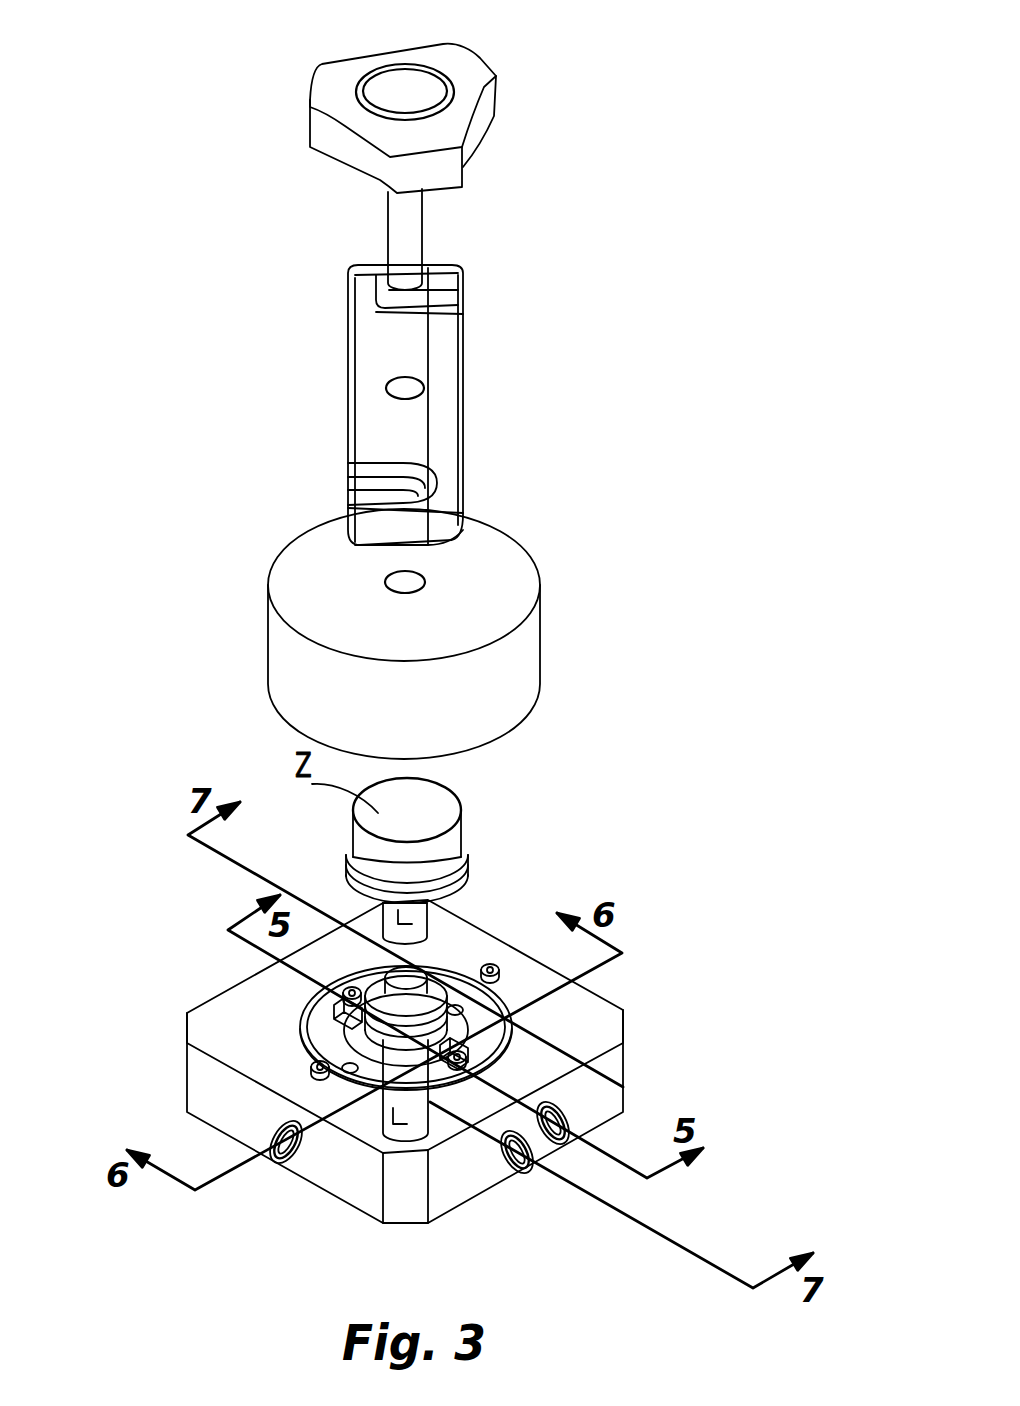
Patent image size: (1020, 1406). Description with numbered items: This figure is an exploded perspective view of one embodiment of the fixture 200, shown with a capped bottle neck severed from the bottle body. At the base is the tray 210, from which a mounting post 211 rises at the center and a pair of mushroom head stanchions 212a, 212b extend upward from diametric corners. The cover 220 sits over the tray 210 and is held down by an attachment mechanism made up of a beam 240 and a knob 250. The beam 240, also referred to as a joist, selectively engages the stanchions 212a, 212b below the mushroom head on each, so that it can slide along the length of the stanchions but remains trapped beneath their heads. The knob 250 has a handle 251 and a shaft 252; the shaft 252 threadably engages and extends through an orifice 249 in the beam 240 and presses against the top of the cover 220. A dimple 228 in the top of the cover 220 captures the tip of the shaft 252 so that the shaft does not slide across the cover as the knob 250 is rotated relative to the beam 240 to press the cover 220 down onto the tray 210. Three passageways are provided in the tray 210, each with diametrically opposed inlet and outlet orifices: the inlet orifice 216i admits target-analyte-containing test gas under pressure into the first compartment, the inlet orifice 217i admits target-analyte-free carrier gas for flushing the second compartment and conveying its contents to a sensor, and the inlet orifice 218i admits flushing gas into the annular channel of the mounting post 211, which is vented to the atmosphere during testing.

The pressure regulator assembly 200 is at (236, 60).
The knob 250 is at (480, 110).
The handle 251 is at (458, 70).
The shaft 252 is at (395, 219).
The beam 240 is at (357, 346).
The orifice 249 is at (404, 387).
The cover 220 is at (287, 661).
The dimple 228 is at (405, 583).
The mushroom head stanchion 212a is at (420, 924).
The tray 210 is at (227, 1013).
The mounting post 211 is at (375, 1050).
The mushroom head stanchion 212b is at (425, 1100).
The inlet orifice 216i is at (268, 1162).
The inlet orifice 217i is at (578, 1149).
The inlet orifice 218i is at (540, 1170).